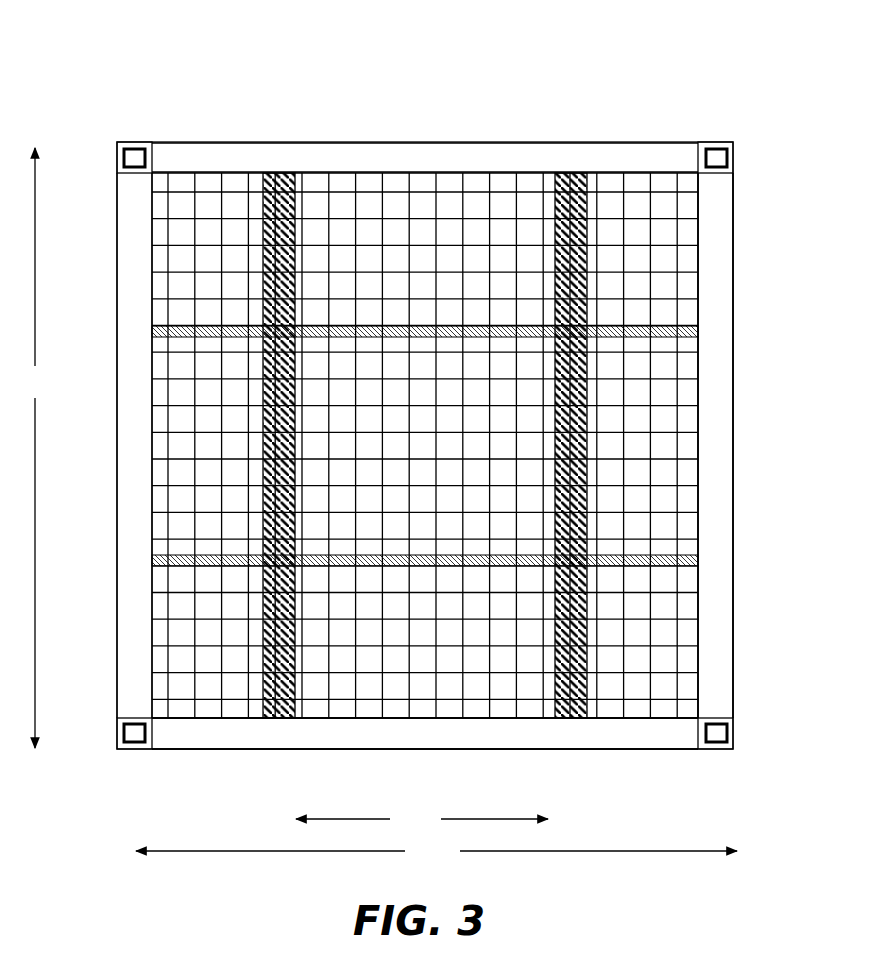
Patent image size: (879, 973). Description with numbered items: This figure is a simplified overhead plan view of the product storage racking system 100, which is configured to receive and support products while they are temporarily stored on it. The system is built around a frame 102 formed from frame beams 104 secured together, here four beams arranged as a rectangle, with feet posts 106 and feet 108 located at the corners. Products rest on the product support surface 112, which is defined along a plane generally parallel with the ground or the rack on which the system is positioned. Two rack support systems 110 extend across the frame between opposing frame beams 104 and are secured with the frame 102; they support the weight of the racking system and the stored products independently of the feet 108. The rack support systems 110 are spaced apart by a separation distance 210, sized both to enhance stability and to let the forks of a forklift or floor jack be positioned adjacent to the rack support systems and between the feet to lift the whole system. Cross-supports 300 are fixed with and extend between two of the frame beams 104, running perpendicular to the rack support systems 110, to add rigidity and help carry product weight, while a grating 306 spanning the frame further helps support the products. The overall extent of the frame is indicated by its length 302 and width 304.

The product storage racking system 100 is at (599, 57).
The frame 102 is at (422, 130).
The frame beams 104 is at (728, 223).
The feet posts 106 is at (123, 160).
The feet 108 is at (141, 142).
The rack support systems 110 is at (282, 188).
The product support surface 112 is at (726, 300).
The separation distance 210 is at (422, 820).
The cross-supports 300 is at (186, 325).
The length 302 is at (37, 448).
The width 304 is at (436, 853).
The gratings 306 is at (188, 512).